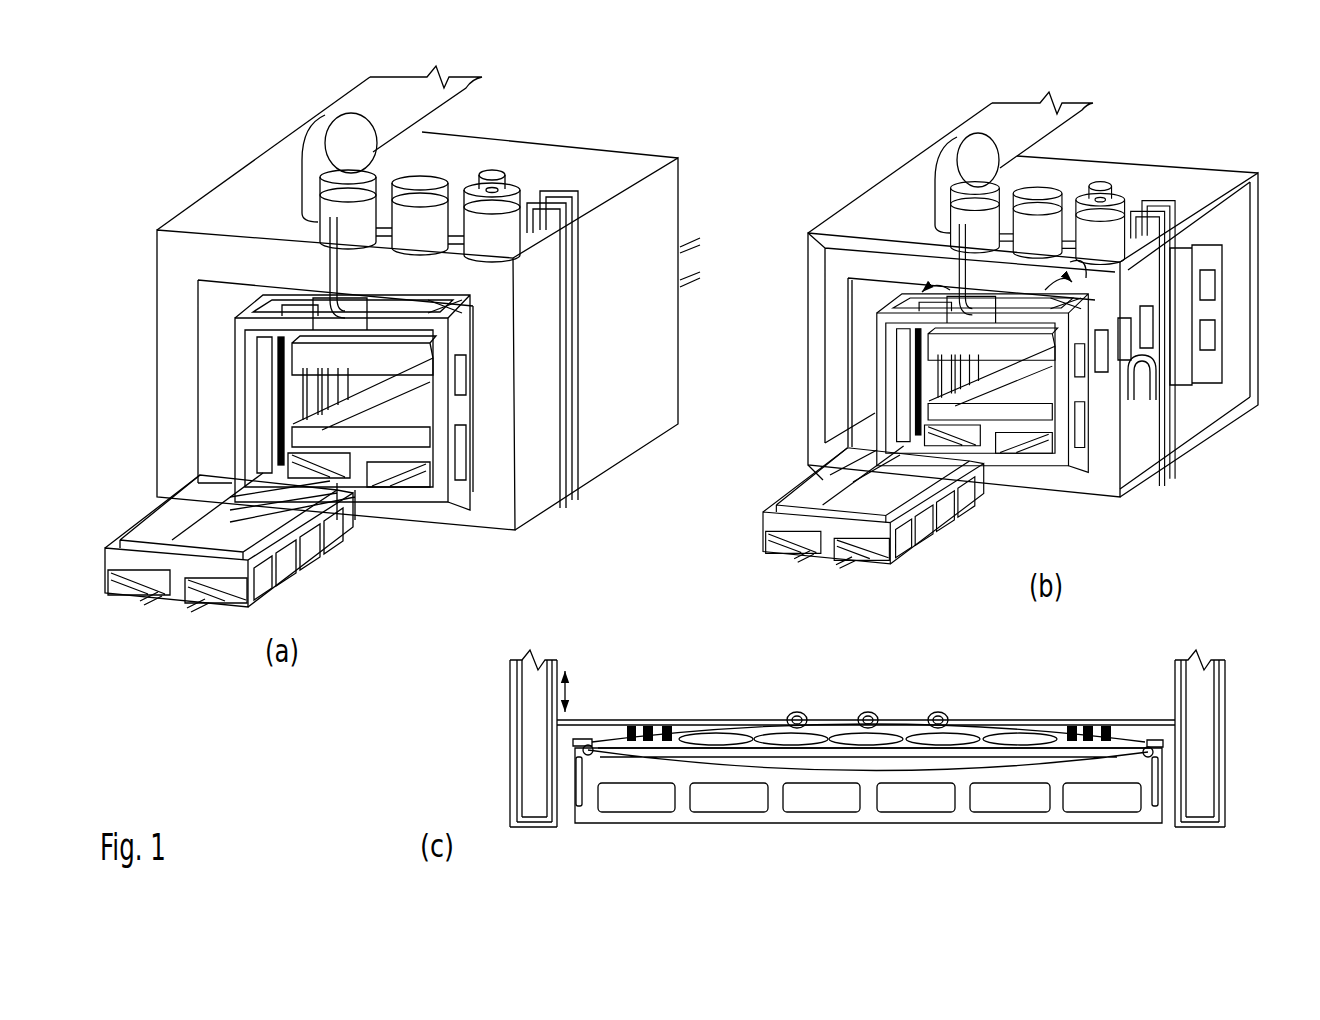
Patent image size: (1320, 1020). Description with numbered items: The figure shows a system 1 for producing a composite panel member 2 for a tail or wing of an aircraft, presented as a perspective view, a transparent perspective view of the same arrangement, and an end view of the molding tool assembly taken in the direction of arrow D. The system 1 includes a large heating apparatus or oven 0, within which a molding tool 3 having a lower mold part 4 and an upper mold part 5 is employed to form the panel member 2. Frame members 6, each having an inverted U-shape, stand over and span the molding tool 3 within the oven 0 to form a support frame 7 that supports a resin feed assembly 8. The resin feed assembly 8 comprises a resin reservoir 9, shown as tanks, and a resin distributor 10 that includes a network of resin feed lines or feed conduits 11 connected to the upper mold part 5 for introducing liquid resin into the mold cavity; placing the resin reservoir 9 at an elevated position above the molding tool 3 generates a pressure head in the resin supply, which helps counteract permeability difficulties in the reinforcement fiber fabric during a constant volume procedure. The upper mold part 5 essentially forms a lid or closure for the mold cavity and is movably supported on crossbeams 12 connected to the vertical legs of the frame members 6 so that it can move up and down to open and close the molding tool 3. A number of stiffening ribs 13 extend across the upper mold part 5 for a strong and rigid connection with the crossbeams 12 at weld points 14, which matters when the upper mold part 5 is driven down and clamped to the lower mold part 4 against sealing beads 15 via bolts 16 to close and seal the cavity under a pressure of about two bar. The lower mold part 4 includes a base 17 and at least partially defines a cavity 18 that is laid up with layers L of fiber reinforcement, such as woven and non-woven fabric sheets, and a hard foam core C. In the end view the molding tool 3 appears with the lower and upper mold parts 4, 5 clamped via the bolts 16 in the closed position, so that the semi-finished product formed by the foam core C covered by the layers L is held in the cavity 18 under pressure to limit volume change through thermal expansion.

The oven 0 is at (682, 185).
The system 1 is at (226, 142).
The panel member 2 is at (180, 512).
The molding tool 3 is at (372, 540).
The lower mold part 4 is at (352, 445).
The upper mold part 5 is at (372, 355).
The frame members 6 is at (240, 425).
The support frame 7 is at (232, 393).
The resin feed assembly 8 is at (305, 288).
The resin reservoir 9 is at (485, 175).
The resin distributor 10 is at (935, 287).
The feed conduits 11 is at (1122, 282).
The crossbeams 12 is at (604, 720).
The stiffening ribs 13 is at (962, 738).
The weld points 14 is at (667, 726).
The sealing beads 15 is at (588, 757).
The bolts 16 is at (1243, 806).
The base 17 is at (300, 540).
The cavity 18 is at (1140, 760).
The layers of fiber reinforcement L is at (245, 540).
The foam core C is at (182, 548).
The arrow D is at (155, 630).